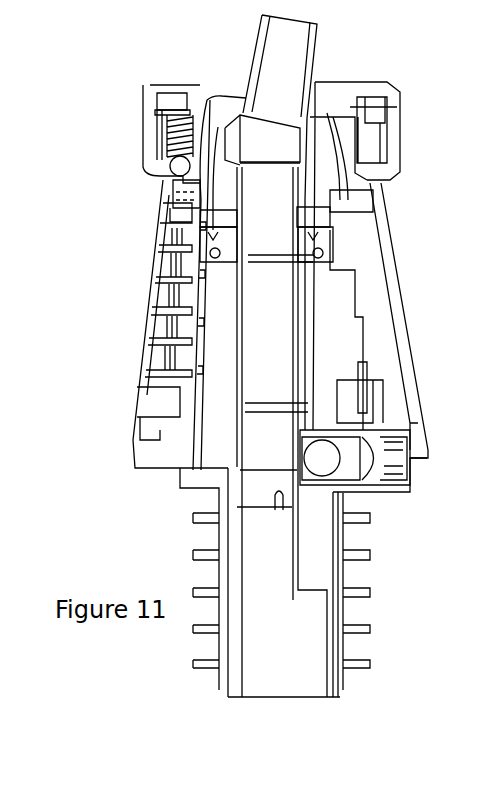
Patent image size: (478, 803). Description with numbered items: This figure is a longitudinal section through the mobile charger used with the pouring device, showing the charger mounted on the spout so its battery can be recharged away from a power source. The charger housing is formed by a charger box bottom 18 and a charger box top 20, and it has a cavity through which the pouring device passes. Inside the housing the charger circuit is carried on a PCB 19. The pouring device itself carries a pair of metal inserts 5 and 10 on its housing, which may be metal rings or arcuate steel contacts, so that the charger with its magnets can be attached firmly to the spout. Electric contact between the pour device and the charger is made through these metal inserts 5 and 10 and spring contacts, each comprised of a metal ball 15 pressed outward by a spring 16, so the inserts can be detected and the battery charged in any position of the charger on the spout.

The metal insert 5 is at (183, 183).
The metal insert 10 is at (357, 183).
The metal ball 15 is at (168, 175).
The spring 16 is at (168, 139).
The charger box bottom 18 is at (147, 92).
The PCB 19 is at (163, 111).
The charger box top 20 is at (172, 163).